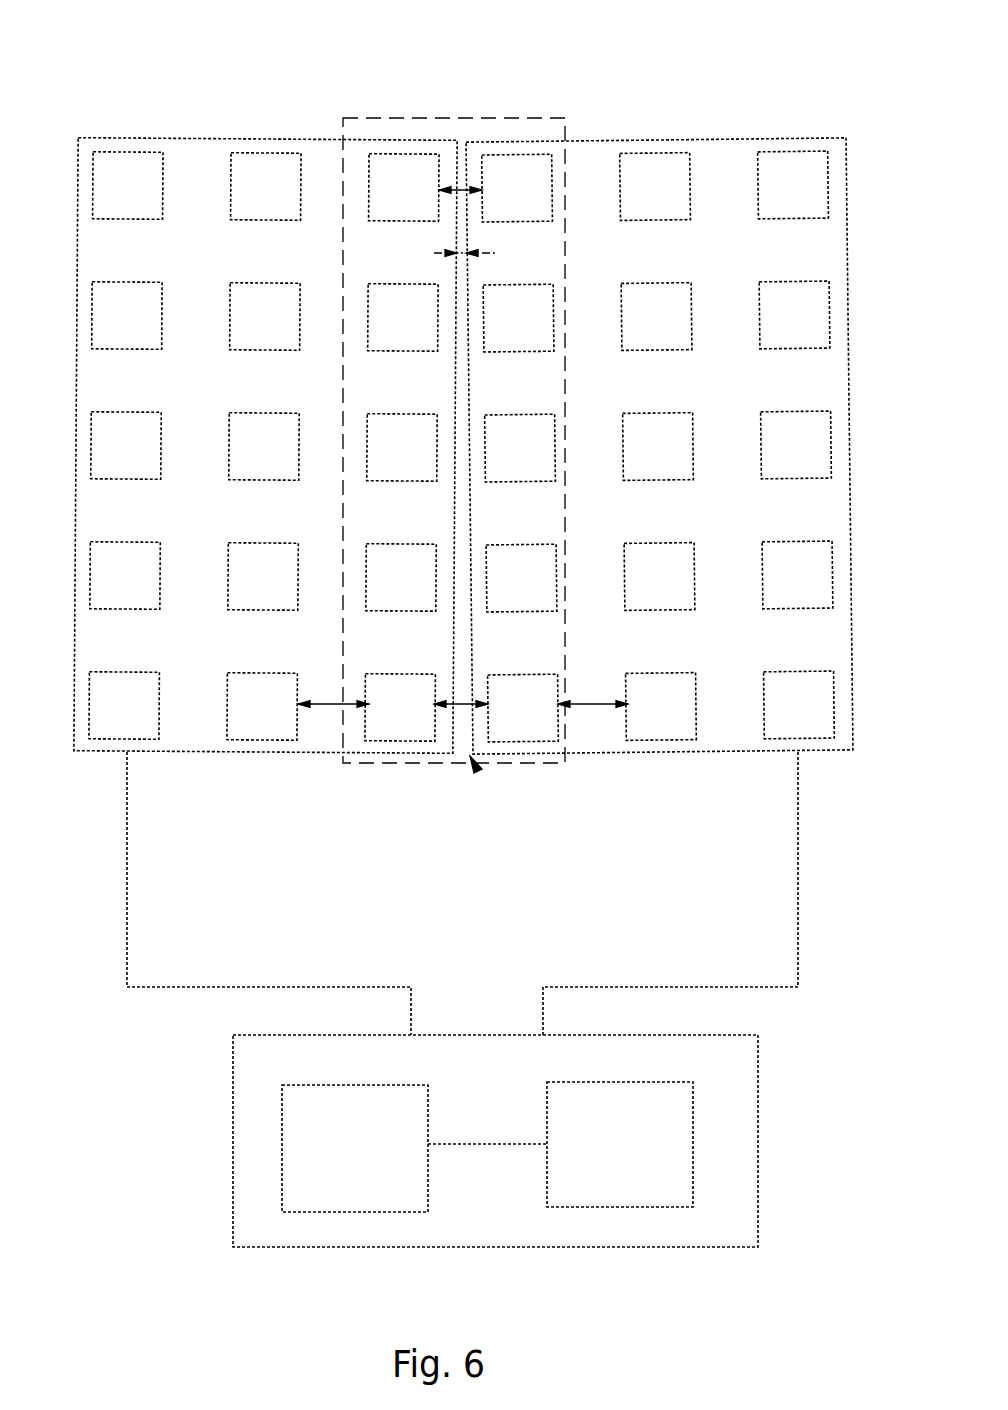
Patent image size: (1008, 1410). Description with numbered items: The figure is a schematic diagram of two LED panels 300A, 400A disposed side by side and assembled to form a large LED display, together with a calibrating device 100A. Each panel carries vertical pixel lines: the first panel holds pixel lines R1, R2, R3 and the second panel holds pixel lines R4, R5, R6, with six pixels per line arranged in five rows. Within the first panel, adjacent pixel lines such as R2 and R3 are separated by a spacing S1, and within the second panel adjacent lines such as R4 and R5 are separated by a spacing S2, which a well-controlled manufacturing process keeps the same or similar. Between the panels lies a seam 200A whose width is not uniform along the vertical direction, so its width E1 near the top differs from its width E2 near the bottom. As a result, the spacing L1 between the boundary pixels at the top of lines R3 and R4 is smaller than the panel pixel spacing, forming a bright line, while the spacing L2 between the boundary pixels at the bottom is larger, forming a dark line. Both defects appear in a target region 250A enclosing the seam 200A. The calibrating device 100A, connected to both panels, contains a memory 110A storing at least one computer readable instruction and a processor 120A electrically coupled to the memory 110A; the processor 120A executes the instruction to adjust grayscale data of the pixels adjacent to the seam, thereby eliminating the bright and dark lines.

The calibrating device 100A is at (490, 1248).
The memory 110A is at (355, 1213).
The processor 120A is at (620, 1208).
The seam 200A is at (458, 127).
The target region 250A is at (344, 120).
The LED panel 300A is at (197, 139).
The LED panel 400A is at (725, 139).
The pixel line R1 is at (130, 140).
The pixel line R2 is at (262, 140).
The pixel line R3 is at (397, 140).
The pixel line R4 is at (519, 142).
The pixel line R5 is at (657, 141).
The pixel line R6 is at (795, 139).
The spacing L1 is at (460, 187).
The spacing L2 is at (460, 708).
The width E1 is at (468, 250).
The width E2 is at (478, 771).
The spacing S1 is at (330, 706).
The spacing S2 is at (592, 706).